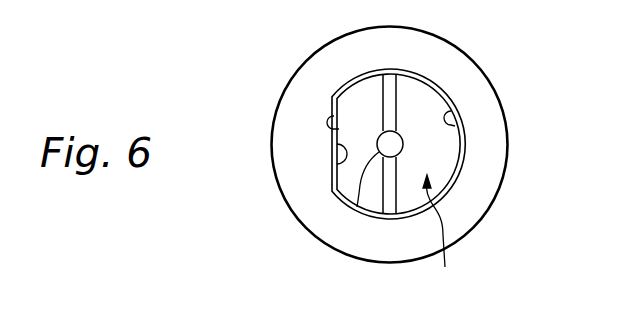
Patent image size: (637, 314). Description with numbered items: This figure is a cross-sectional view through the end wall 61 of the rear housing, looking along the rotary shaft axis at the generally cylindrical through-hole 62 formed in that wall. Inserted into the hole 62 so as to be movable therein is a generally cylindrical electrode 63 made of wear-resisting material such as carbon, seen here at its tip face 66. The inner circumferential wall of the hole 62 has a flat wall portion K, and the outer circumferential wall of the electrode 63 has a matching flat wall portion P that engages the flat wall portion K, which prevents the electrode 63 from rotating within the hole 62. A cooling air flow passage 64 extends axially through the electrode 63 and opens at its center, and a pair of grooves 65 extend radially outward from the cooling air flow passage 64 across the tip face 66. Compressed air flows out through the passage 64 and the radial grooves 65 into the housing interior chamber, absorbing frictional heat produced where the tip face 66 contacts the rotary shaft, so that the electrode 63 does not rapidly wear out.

The end wall 61 is at (323, 58).
The through-hole 62 is at (451, 111).
The electrode 63 is at (444, 236).
The cooling air flow passage 64 is at (358, 205).
The grooves 65 is at (393, 103).
The tip face 66 is at (442, 160).
The flat wall portion K is at (336, 163).
The flat wall portion P is at (334, 116).